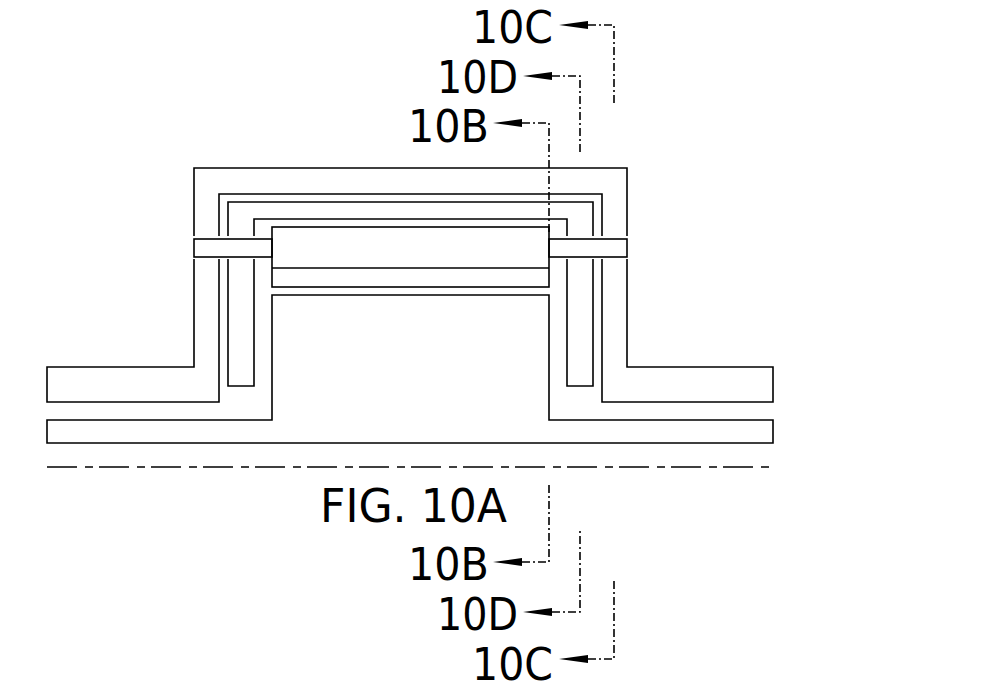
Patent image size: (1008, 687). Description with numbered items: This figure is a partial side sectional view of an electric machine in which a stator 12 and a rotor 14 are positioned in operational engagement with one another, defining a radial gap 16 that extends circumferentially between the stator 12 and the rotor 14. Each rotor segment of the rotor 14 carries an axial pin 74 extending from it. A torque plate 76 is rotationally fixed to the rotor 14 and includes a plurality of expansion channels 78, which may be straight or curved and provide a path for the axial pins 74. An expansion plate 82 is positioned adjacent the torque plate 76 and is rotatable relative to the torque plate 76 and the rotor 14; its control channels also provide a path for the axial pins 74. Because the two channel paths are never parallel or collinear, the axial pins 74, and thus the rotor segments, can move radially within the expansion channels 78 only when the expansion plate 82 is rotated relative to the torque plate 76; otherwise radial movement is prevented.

The stator 12 is at (424, 379).
The rotor 14 is at (424, 260).
The radial gap 16 is at (295, 292).
The axial pin 74 is at (205, 247).
The torque plate 76 is at (613, 297).
The expansion channel 78 is at (613, 258).
The expansion plate 82 is at (580, 348).